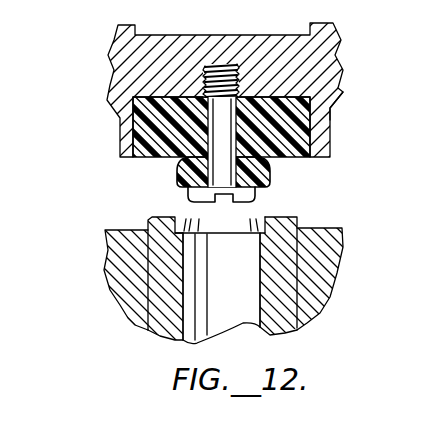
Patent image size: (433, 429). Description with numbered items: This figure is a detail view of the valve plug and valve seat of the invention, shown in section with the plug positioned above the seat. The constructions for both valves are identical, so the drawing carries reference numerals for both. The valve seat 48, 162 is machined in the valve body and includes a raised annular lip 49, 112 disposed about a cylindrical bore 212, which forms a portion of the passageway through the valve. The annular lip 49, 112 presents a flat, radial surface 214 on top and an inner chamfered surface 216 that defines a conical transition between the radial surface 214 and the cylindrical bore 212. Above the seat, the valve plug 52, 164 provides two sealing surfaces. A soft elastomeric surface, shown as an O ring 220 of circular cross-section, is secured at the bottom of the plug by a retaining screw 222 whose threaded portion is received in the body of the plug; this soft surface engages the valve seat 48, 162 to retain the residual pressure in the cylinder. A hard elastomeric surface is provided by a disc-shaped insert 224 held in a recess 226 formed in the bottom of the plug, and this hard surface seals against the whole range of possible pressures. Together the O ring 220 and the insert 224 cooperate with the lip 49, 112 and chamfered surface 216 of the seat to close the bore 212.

The retaining screw 222 is at (217, 66).
The valve plug 52 is at (267, 90).
The valve plug 164 is at (312, 60).
The recess 226 is at (314, 88).
The disc-shaped insert 224 is at (313, 127).
The O ring 220 is at (176, 172).
The radial surface 214 is at (165, 218).
The chamfered surface 216 is at (237, 257).
The valve seat 48 is at (351, 265).
The valve seat 162 is at (298, 223).
The annular lip 49 is at (84, 280).
The annular lip 112 is at (140, 237).
The cylindrical bore 212 is at (203, 317).